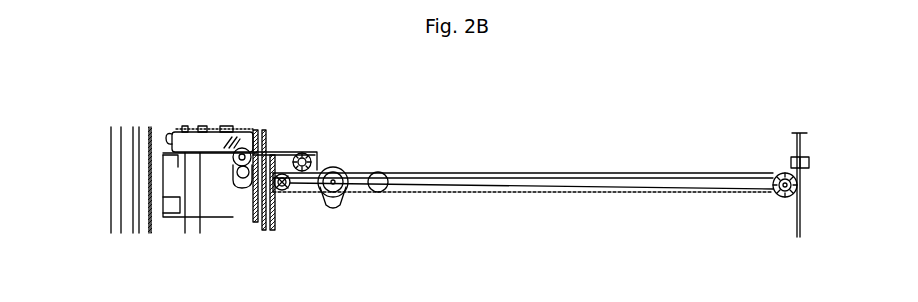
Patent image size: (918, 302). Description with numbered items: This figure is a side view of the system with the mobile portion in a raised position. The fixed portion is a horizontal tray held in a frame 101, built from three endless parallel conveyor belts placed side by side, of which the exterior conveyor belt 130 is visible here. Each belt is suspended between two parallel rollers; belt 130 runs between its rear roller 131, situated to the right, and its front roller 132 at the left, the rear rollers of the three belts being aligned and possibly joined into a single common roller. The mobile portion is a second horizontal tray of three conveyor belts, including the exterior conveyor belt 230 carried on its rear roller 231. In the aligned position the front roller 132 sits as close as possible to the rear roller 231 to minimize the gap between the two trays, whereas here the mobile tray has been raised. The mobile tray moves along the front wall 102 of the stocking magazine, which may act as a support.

The frame 101 is at (803, 137).
The front wall 102 is at (150, 143).
The conveyor belt 130 is at (495, 172).
The rear roller 131 is at (772, 194).
The front roller 132 is at (280, 192).
The conveyor belt 230 is at (273, 150).
The rear roller 231 is at (303, 153).